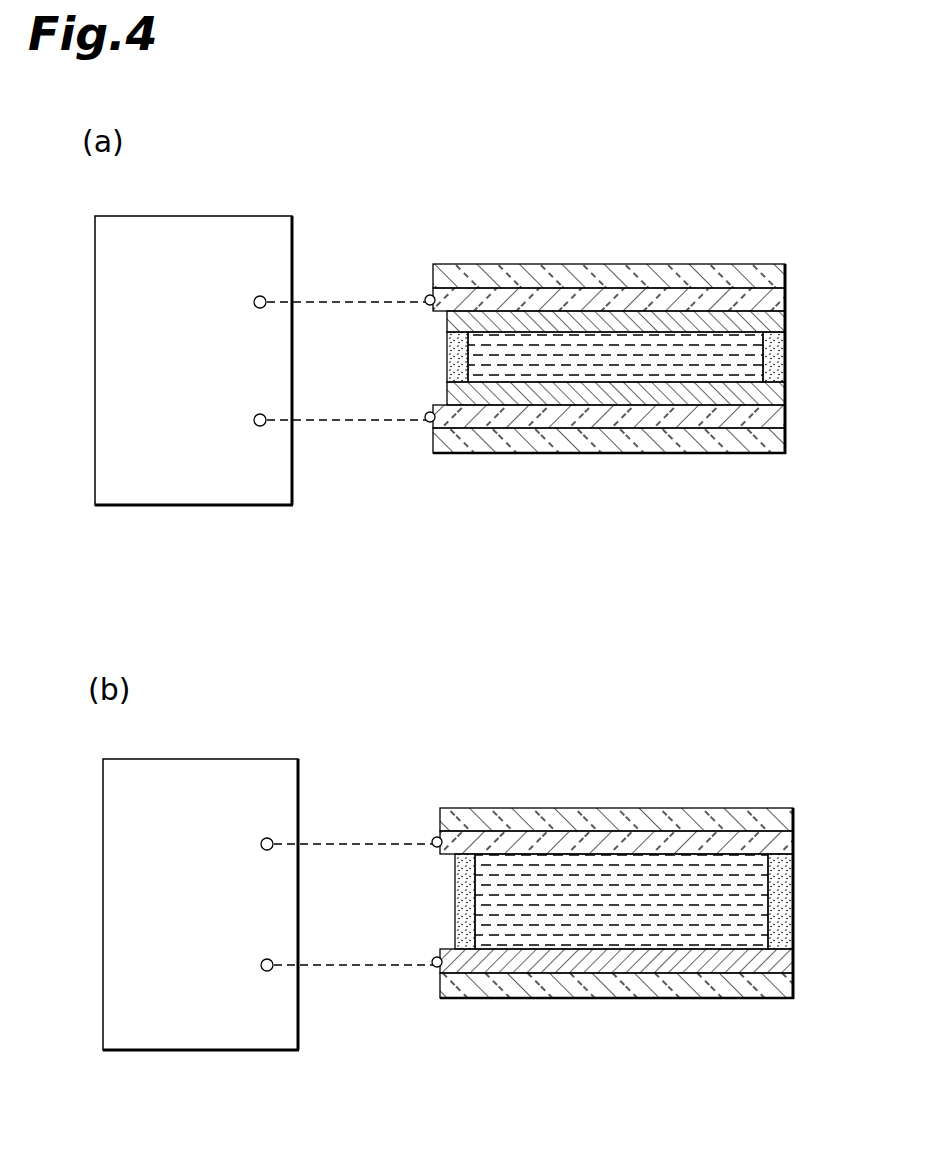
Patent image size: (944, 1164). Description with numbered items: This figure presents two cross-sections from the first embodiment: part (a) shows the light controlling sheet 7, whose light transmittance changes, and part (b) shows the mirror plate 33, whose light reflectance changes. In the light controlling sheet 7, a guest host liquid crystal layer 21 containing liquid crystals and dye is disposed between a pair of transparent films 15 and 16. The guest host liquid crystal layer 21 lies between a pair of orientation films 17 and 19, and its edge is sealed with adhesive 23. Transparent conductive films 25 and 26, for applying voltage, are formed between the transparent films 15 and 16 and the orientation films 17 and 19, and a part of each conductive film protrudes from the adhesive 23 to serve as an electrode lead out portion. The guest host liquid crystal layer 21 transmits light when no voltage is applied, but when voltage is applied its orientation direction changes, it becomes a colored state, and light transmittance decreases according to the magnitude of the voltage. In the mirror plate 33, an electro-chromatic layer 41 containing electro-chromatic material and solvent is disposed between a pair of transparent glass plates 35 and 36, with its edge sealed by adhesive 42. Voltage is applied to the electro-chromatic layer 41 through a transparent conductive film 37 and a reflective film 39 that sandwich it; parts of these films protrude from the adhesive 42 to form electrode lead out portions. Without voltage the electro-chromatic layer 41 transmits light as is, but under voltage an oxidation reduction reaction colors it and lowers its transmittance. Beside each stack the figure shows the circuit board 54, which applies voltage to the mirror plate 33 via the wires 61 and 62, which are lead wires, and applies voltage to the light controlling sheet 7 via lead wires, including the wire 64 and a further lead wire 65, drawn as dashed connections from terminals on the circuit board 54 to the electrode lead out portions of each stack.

The light controlling sheet 7 is at (647, 328).
The transparent film 15 is at (776, 275).
The transparent film 16 is at (776, 455).
The orientation film 17 is at (778, 320).
The orientation film 19 is at (780, 396).
The guest host liquid crystal layer 21 is at (753, 350).
The adhesive 23 is at (774, 366).
The transparent conductive film 25 is at (773, 294).
The transparent conductive film 26 is at (785, 420).
The circuit board 54 is at (205, 229).
The wire 64 is at (347, 300).
The lead wire 65 is at (346, 425).
The mirror plate 33 is at (653, 875).
The transparent glass plate 35 is at (795, 810).
The transparent glass plate 36 is at (782, 1000).
The transparent conductive film 37 is at (780, 842).
The reflective film 39 is at (785, 957).
The electro-chromatic layer 41 is at (760, 900).
The adhesive 42 is at (785, 920).
The wire 61 is at (352, 842).
The wire 62 is at (353, 969).